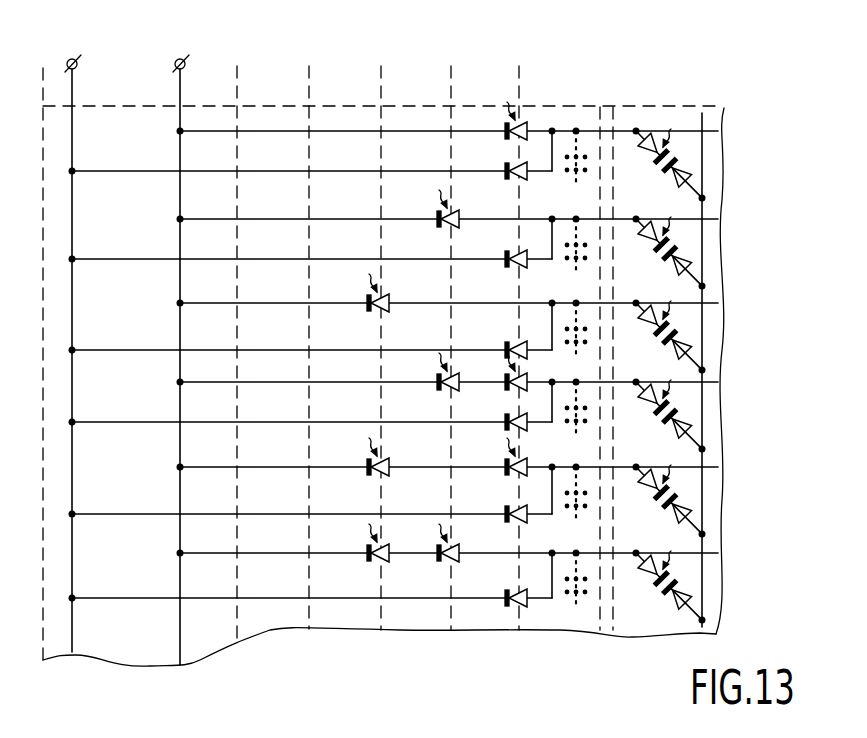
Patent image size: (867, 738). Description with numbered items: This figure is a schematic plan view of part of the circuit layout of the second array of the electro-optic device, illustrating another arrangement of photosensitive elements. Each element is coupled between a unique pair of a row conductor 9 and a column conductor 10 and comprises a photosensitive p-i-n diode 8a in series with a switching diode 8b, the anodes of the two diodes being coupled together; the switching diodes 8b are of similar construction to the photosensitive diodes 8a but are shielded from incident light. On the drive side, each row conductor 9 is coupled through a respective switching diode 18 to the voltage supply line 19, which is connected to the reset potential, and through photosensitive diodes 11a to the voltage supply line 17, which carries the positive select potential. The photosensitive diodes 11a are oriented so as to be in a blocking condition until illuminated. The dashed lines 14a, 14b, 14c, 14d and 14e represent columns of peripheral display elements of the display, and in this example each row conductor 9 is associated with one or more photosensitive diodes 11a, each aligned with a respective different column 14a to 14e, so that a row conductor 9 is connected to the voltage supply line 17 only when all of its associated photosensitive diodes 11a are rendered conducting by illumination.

The voltage supply line 19 is at (74, 82).
The voltage supply line 17 is at (182, 82).
The column of peripheral display elements 14a is at (522, 333).
The column of peripheral display elements 14b is at (454, 333).
The column of peripheral display elements 14c is at (384, 333).
The column of peripheral display elements 14d is at (312, 333).
The column of peripheral display elements 14e is at (240, 339).
The photosensitive diode 11a is at (525, 120).
The switching diode 18 is at (524, 163).
The photosensitive p-i-n diode 8a is at (652, 140).
The switching diode 8b is at (690, 179).
The row conductor 9 is at (706, 134).
The column conductor 10 is at (705, 168).